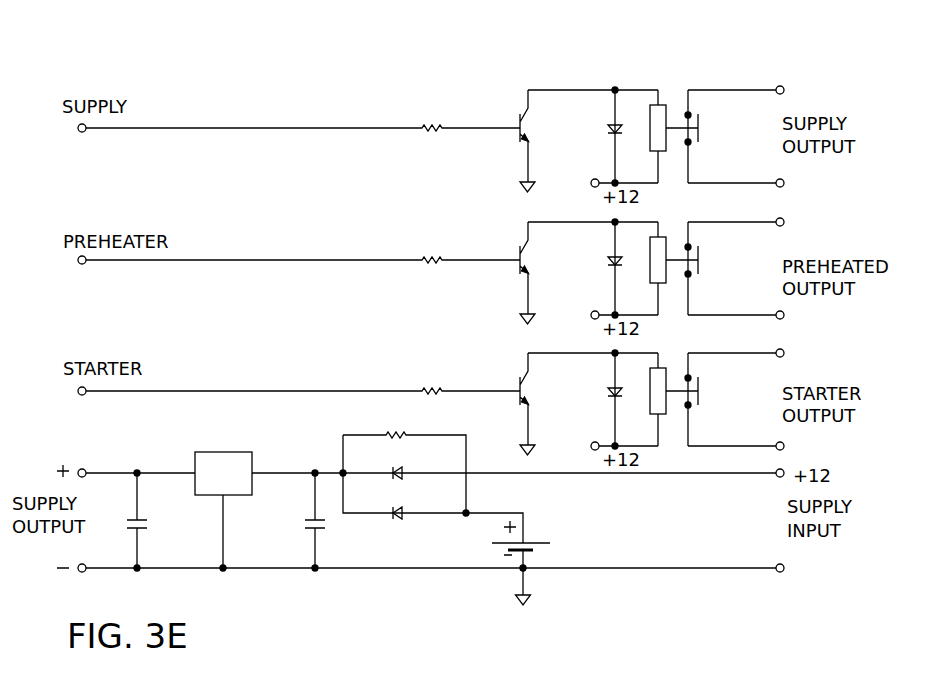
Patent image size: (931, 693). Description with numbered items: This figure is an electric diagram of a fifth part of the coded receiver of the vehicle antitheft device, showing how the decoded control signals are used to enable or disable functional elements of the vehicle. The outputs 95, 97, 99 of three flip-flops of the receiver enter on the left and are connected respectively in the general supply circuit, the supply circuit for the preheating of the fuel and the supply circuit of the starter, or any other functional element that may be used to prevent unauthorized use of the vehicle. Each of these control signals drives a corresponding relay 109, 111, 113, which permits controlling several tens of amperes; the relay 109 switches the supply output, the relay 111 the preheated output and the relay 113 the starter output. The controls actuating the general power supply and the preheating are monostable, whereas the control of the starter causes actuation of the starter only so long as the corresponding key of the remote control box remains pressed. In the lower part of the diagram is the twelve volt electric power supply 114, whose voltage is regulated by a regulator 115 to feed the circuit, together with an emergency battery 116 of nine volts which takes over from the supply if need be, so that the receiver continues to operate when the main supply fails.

The output of the flip-flop 95 is at (270, 127).
The output of the flip-flop 97 is at (246, 259).
The output of the flip-flop 99 is at (214, 390).
The relay 109 is at (683, 124).
The relay 111 is at (676, 256).
The relay 113 is at (678, 388).
The electric power supply 114 is at (763, 537).
The regulator 115 is at (231, 461).
The emergency battery 116 is at (533, 553).